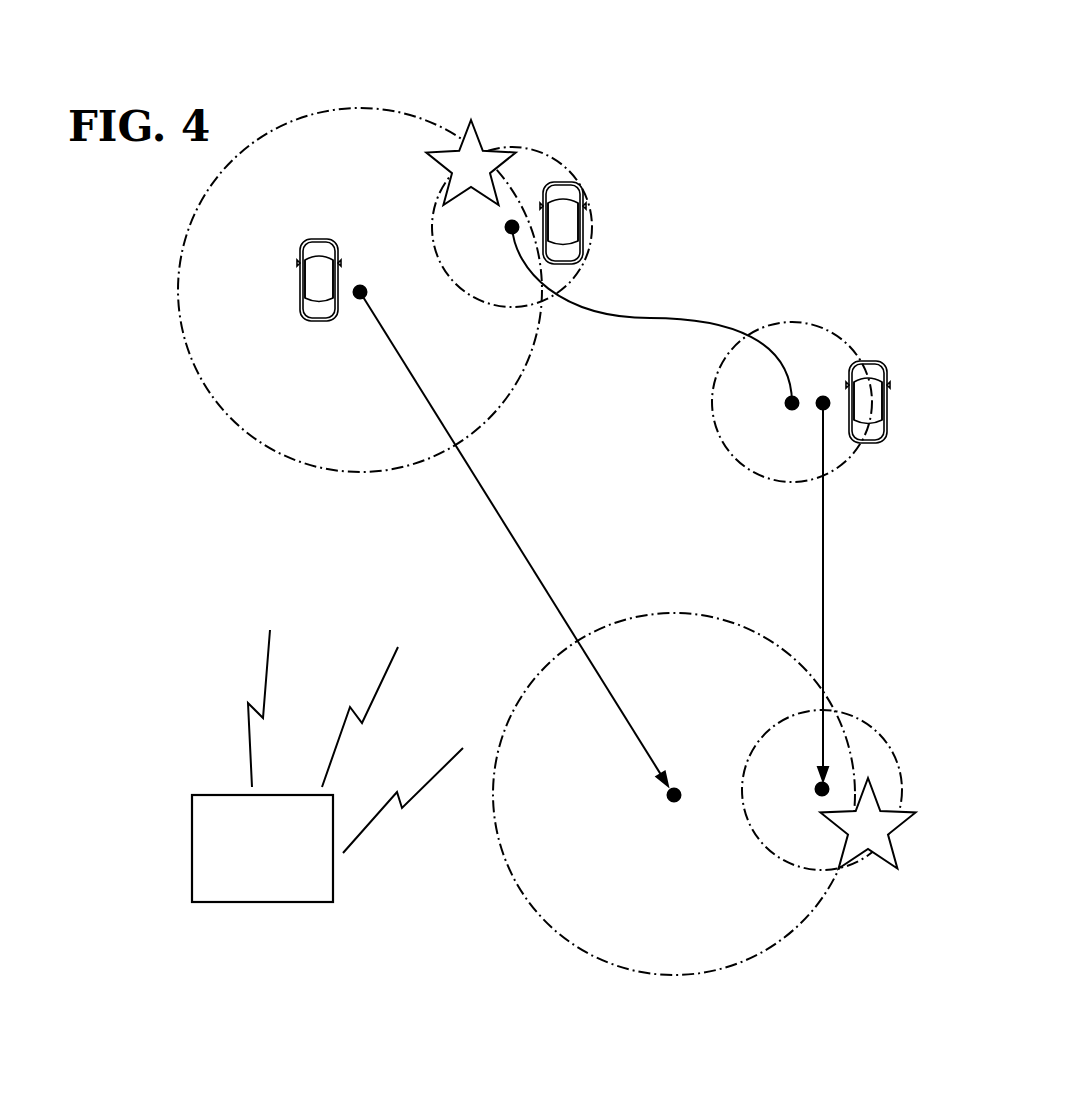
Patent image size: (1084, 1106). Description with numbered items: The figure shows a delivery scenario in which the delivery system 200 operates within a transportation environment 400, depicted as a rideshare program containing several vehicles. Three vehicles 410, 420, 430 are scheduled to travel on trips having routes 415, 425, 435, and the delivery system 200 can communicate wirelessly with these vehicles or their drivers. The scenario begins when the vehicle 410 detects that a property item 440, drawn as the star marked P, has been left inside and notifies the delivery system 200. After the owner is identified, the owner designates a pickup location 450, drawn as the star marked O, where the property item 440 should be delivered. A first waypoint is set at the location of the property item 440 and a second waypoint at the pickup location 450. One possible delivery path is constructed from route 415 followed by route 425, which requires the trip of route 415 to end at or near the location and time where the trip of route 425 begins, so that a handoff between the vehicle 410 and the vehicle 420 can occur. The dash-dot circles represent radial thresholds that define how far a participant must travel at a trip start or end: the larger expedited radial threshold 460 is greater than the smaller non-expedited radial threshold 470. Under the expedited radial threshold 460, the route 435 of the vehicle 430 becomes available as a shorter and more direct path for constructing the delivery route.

The delivery system 200 is at (327, 766).
The transportation environment 400 is at (477, 953).
The vehicle 410 is at (568, 230).
The route 415 is at (693, 318).
The vehicle 420 is at (870, 383).
The route 425 is at (824, 584).
The vehicle 430 is at (317, 320).
The route 435 is at (488, 502).
The property item 440 is at (448, 150).
The pickup location 450 is at (877, 857).
The expedited radial threshold 460 is at (233, 422).
The non-expedited radial threshold 470 is at (542, 149).